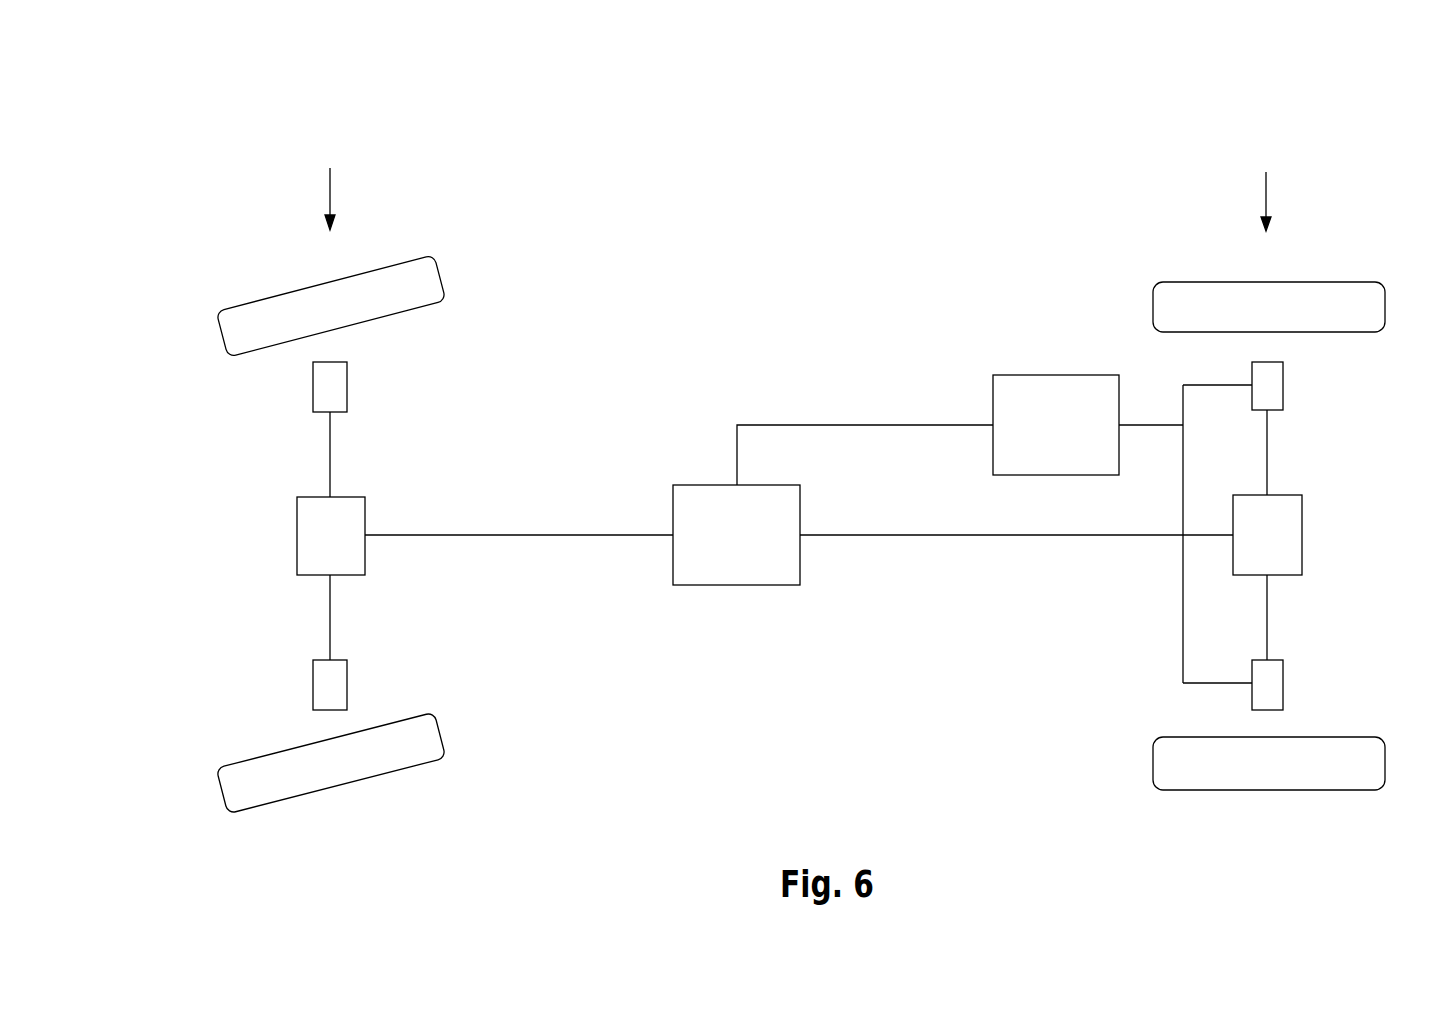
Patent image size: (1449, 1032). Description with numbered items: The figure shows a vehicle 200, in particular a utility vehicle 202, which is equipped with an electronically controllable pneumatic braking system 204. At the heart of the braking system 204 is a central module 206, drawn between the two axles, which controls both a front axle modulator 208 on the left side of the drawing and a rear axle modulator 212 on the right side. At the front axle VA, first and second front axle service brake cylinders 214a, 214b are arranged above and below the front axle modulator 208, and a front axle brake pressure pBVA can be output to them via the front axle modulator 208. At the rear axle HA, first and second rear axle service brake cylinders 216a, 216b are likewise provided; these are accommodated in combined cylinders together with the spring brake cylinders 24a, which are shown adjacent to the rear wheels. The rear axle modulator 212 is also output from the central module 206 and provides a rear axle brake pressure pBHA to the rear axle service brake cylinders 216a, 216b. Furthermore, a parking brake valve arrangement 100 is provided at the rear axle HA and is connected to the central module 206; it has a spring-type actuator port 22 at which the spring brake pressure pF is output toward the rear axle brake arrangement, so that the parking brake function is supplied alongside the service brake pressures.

The vehicle 200 is at (276, 198).
The utility vehicle 202 is at (242, 197).
The electronically controllable pneumatic braking system 204 is at (596, 328).
The central module 206 is at (715, 549).
The front axle modulator 208 is at (365, 512).
The rear axle modulator 212 is at (1303, 530).
The first front axle service brake cylinder 214a is at (347, 386).
The second front axle service brake cylinder 214b is at (347, 683).
The first rear axle service brake cylinder 216a is at (1285, 410).
The second rear axle service brake cylinder 216b is at (1283, 662).
The parking brake valve arrangement 100 is at (1035, 441).
The spring-type actuator port 22 is at (1122, 422).
The spring brake cylinder 24a is at (1284, 392).
The front axle VA is at (330, 183).
The rear axle HA is at (1269, 185).
The front axle brake pressure pBVA is at (328, 608).
The rear axle brake pressure pBHA is at (1267, 492).
The spring brake pressure pF is at (1141, 427).